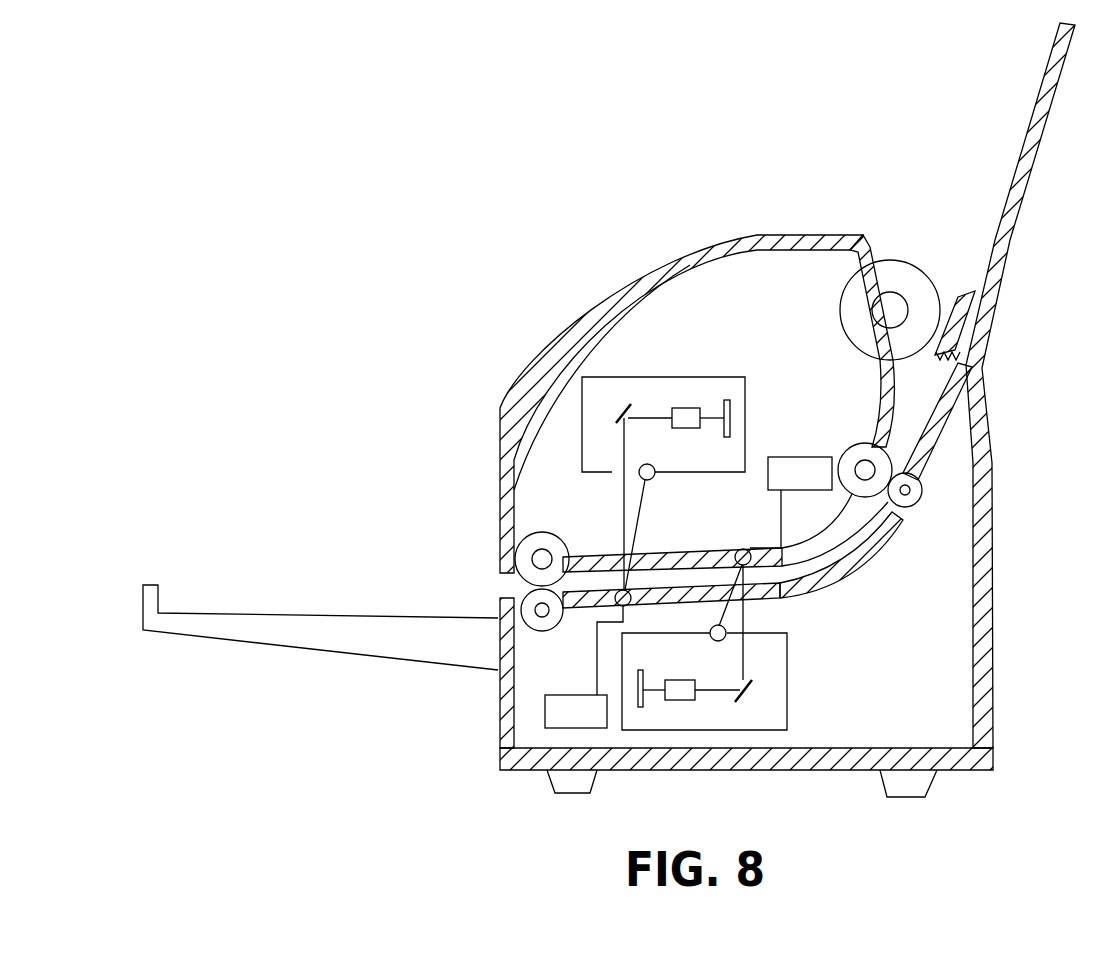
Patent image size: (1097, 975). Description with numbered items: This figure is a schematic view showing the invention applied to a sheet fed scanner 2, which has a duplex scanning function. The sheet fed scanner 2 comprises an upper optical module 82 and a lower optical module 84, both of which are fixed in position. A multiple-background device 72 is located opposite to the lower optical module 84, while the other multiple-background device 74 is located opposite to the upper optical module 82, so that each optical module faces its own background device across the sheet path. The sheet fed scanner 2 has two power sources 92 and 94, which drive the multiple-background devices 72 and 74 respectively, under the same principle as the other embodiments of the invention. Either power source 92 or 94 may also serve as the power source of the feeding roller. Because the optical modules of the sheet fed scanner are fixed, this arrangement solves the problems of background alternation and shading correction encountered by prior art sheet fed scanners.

The sheet fed scanner 2 is at (548, 300).
The multiple-background device 72 is at (737, 546).
The multiple-background device 74 is at (612, 623).
The upper optical module 82 is at (640, 377).
The lower optical module 84 is at (790, 686).
The power source 92 is at (794, 457).
The power source 94 is at (545, 711).